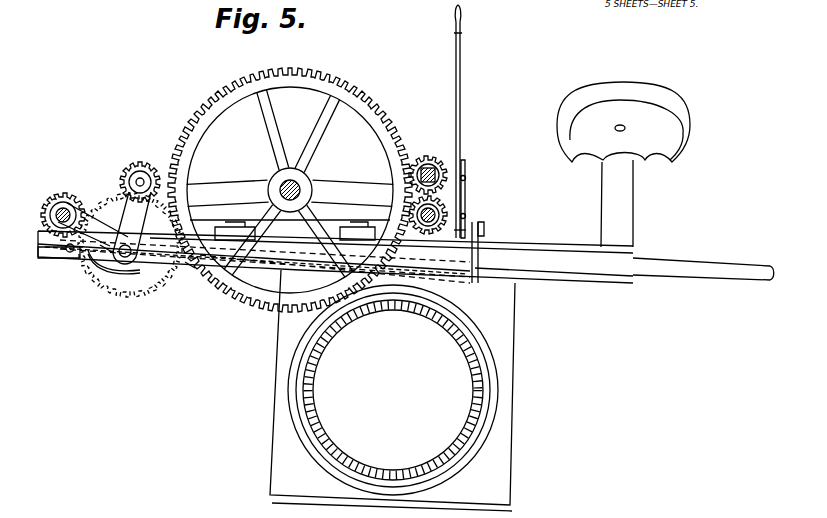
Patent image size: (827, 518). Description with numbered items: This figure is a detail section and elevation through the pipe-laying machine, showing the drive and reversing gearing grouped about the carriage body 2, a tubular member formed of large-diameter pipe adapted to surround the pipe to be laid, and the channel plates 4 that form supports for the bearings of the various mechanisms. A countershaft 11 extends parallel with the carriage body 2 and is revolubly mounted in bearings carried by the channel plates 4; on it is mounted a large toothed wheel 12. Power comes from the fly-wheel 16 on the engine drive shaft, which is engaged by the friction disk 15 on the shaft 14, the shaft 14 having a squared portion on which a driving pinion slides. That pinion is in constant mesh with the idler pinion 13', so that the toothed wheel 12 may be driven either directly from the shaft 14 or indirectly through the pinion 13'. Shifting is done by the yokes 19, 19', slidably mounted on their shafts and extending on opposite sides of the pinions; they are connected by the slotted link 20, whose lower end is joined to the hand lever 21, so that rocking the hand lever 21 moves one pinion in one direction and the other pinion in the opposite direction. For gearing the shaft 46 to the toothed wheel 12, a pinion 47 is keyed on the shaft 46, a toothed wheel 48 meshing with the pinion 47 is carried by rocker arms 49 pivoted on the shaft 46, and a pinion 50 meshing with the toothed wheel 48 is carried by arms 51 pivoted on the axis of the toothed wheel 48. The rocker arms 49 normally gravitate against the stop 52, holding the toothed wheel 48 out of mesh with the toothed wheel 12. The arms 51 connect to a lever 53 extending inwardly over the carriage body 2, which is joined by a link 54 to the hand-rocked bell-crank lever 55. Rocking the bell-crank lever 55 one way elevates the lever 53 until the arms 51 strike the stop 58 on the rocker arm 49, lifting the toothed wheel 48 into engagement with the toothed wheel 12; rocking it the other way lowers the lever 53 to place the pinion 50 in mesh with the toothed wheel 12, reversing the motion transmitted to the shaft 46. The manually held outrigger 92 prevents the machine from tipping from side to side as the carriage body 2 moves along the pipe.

The carriage body 2 is at (490, 376).
The channel plates 4 is at (505, 330).
The countershaft 11 is at (300, 183).
The toothed wheel 12 is at (325, 75).
The pinion 13' is at (406, 215).
The shaft 14 is at (426, 158).
The friction disk 15 is at (410, 171).
The fly-wheel 16 is at (256, 260).
The yoke 19 is at (467, 121).
The yoke 19' is at (480, 213).
The link 20 is at (466, 193).
The hand lever 21 is at (466, 220).
The shaft 46 is at (60, 208).
The pinion 47 is at (58, 195).
The toothed wheel 48 is at (140, 298).
The rocker arms 49 is at (100, 250).
The pinion 50 is at (132, 168).
The arms 51 is at (125, 198).
The stop 52 is at (60, 257).
The lever 53 is at (188, 270).
The link 54 is at (480, 266).
The bell-crank lever 55 is at (485, 229).
The stop 58 is at (100, 243).
The outrigger 92 is at (700, 262).